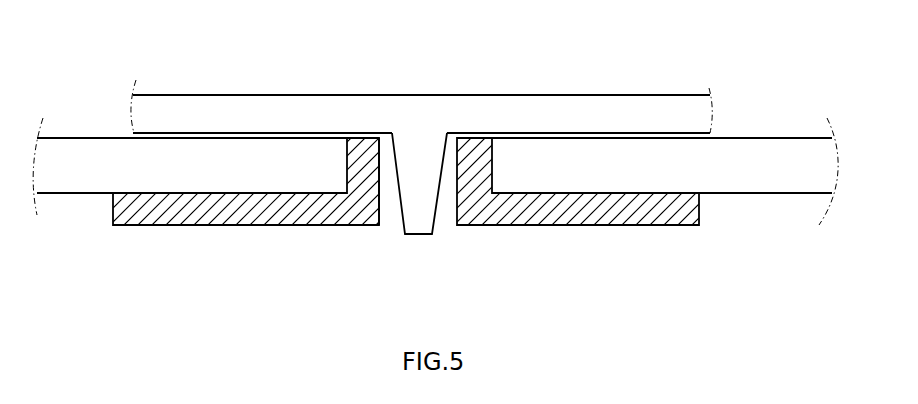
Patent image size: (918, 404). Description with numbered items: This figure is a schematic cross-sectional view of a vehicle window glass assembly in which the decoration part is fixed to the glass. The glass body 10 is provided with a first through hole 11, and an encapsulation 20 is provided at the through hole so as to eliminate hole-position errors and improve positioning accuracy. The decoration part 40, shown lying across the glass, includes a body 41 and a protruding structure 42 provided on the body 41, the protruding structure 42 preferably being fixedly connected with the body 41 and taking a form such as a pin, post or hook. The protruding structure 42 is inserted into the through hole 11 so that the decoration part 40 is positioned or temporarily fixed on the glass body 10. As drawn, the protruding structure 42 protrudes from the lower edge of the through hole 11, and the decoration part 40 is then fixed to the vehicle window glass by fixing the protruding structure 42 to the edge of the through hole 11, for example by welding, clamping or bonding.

The glass body 10 is at (172, 170).
The first through hole 11 is at (393, 212).
The encapsulation 20 is at (617, 218).
The decoration part 40 is at (595, 118).
The body 41 is at (435, 115).
The protruding structure 42 is at (413, 198).